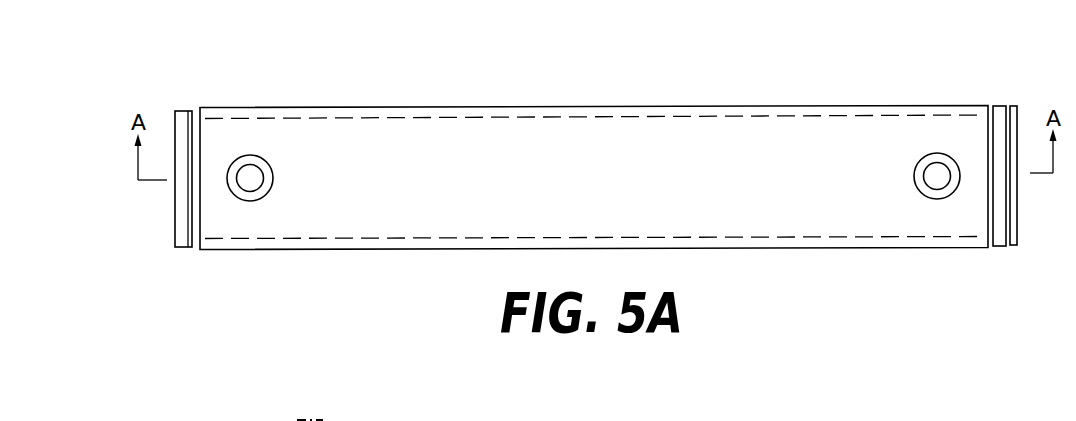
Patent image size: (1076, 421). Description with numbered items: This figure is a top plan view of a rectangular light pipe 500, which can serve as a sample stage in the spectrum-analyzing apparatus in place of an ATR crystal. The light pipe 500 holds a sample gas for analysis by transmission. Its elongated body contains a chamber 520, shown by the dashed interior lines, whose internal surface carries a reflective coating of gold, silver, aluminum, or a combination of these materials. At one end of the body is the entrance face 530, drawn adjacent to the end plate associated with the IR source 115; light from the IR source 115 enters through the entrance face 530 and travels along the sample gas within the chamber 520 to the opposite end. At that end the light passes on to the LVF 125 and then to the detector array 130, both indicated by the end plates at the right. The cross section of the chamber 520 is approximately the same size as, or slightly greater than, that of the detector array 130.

The rectangular light pipe 500 is at (661, 83).
The chamber 520 is at (716, 205).
The IR source 115 is at (167, 235).
The entrance face 530 is at (194, 222).
The LVF 125 is at (998, 103).
The detector array 130 is at (1013, 103).